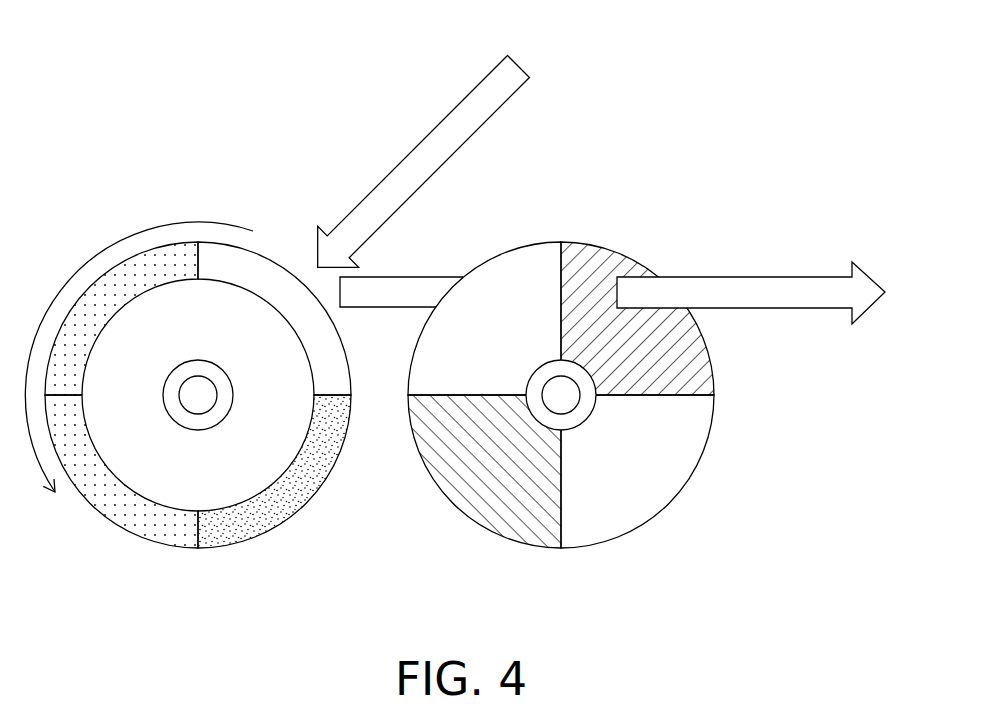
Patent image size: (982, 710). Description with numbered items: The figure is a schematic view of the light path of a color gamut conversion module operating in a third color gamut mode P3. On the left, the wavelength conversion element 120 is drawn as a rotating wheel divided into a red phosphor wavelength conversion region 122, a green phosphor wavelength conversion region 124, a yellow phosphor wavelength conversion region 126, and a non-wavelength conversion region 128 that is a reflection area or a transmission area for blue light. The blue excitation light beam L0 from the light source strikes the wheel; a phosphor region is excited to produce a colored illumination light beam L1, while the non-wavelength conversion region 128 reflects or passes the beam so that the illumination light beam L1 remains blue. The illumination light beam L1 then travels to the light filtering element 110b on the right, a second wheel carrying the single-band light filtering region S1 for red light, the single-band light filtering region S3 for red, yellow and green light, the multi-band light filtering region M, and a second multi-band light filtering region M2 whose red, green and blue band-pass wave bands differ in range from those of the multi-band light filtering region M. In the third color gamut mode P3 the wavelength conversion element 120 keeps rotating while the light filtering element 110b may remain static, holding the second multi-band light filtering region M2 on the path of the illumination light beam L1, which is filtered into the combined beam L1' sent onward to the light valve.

The wavelength conversion element 120 is at (186, 398).
The wavelength conversion region 122 is at (267, 505).
The wavelength conversion region 124 is at (107, 493).
The wavelength conversion region 126 is at (107, 295).
The non-wavelength conversion region 128 is at (275, 273).
The light filtering element 110b is at (643, 366).
The excitation light beam L0 is at (428, 161).
The illumination light beam L1 is at (401, 263).
The combined beam L1' is at (770, 293).
The single-band light filtering region S1 is at (510, 305).
The single-band light filtering region S3 is at (620, 460).
The multi-band light filtering region M is at (517, 480).
The second multi-band light filtering region M2 is at (584, 286).
The third color gamut mode P3 is at (802, 612).